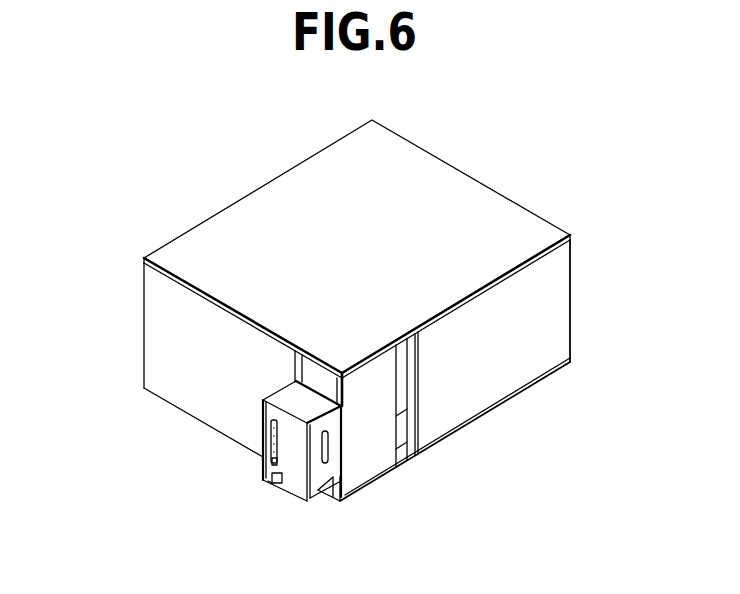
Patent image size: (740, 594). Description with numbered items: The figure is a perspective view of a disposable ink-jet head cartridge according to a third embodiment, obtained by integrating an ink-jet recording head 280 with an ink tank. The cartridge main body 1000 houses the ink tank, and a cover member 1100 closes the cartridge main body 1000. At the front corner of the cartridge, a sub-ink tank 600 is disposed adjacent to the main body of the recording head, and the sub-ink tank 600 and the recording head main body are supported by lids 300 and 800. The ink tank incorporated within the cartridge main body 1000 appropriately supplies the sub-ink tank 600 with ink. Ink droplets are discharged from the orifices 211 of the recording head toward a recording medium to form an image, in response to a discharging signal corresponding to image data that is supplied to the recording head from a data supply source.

The ink-jet recording head 280 is at (246, 158).
The cover member 1100 is at (480, 198).
The cartridge main body 1000 is at (187, 402).
The lid 800 is at (362, 470).
The lid 300 is at (272, 392).
The sub-ink tank 600 is at (295, 475).
The orifices 211 is at (273, 475).